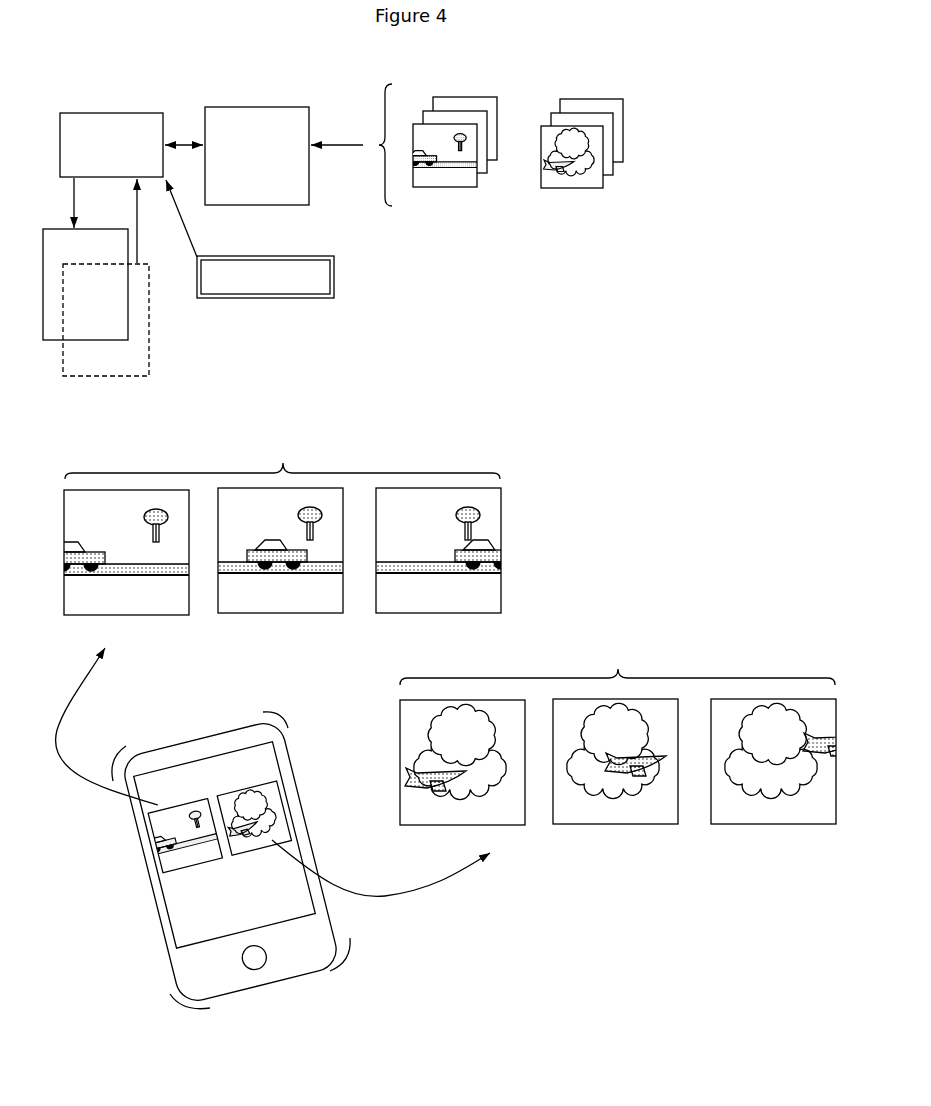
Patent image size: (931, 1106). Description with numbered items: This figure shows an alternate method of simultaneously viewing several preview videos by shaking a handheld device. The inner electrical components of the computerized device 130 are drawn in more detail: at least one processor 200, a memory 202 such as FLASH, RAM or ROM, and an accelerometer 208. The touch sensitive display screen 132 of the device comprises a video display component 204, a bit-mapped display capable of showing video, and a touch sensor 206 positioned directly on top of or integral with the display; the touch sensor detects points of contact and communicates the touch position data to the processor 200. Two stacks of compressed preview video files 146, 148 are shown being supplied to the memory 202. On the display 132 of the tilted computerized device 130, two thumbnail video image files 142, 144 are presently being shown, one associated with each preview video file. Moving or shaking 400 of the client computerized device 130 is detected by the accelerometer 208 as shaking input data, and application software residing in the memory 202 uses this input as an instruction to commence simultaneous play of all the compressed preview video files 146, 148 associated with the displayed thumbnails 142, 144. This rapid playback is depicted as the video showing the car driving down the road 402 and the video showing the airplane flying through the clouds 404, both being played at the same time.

The processor 200 is at (111, 145).
The memory 202 is at (257, 156).
The video display component 204 is at (83, 224).
The touch sensor 206 is at (150, 364).
The accelerometer 208 is at (270, 251).
The compressed preview video file 146 is at (459, 94).
The compressed preview video file 148 is at (589, 94).
The video showing the car driving down the road 402 is at (280, 625).
The video showing the airplane flying through the clouds 404 is at (568, 772).
The computerized device 130 is at (203, 725).
The moving or shaking of the client computerized device 400 is at (307, 700).
The touch sensitive display screen 132 is at (225, 845).
The thumbnail video image file 142 is at (168, 860).
The thumbnail video image file 144 is at (278, 822).